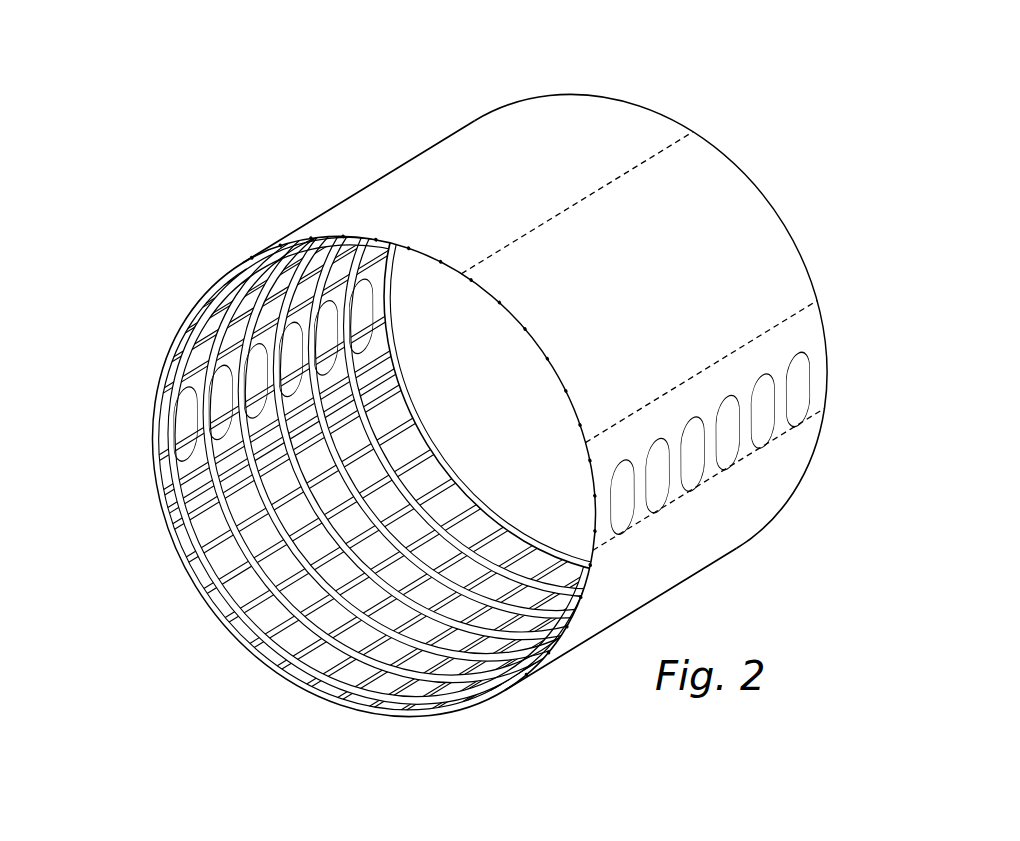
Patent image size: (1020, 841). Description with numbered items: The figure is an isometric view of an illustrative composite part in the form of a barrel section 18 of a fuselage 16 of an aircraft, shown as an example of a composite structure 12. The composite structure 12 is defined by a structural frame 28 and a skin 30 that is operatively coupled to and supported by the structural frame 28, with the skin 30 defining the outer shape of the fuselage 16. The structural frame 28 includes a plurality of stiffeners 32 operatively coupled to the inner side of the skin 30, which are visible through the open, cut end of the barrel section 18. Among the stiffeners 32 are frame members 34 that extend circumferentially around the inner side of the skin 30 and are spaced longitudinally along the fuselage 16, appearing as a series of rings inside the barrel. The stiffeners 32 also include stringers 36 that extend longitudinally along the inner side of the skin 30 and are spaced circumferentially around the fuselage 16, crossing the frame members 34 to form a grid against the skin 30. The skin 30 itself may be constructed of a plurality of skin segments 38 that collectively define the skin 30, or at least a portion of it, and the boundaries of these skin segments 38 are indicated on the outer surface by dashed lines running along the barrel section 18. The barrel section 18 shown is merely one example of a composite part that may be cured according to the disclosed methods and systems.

The composite structure 12 is at (206, 97).
The fuselage 16 is at (212, 156).
The barrel section 18 is at (336, 116).
The structural frame 28 is at (137, 598).
The skin 30 is at (440, 137).
The stiffeners 32 is at (170, 561).
The frame members 34 is at (367, 453).
The stringers 36 is at (297, 657).
The skin segments 38 is at (655, 156).